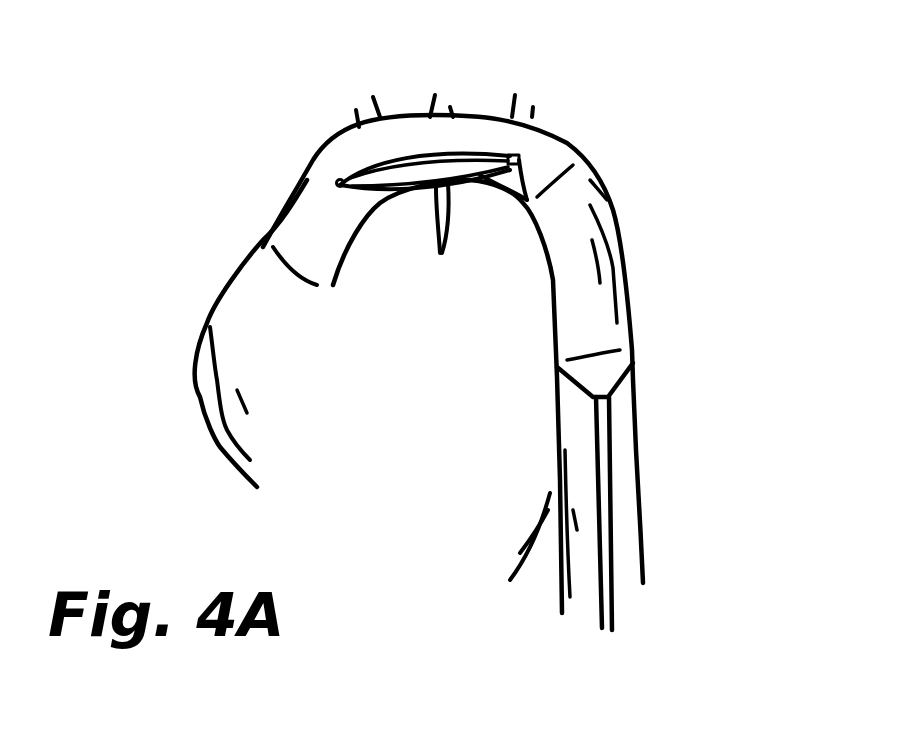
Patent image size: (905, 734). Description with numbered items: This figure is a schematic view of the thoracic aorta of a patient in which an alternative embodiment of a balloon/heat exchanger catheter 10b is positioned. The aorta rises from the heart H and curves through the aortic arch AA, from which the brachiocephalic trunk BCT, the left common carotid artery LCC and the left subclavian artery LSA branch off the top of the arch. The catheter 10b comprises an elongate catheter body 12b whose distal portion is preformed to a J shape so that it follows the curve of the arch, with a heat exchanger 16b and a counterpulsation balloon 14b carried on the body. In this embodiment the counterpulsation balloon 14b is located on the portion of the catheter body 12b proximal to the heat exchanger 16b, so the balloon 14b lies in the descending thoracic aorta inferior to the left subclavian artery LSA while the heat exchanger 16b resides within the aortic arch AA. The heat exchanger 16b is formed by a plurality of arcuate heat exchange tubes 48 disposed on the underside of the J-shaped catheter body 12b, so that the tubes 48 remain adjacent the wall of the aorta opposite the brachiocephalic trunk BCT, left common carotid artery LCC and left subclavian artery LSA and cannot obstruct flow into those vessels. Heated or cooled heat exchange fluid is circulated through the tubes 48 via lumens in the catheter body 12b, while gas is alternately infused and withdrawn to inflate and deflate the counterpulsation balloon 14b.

The balloon/heat exchanger catheter 10b is at (514, 353).
The catheter body 12b is at (613, 487).
The counterpulsation balloon 14b is at (622, 272).
The heat exchanger 16b is at (378, 159).
The heat exchange tubes 48 is at (444, 241).
The aortic arch AA is at (307, 210).
The heart H is at (412, 445).
The brachiocephalic trunk BCT is at (356, 110).
The left common carotid artery LCC is at (450, 107).
The left subclavian artery LSA is at (533, 107).